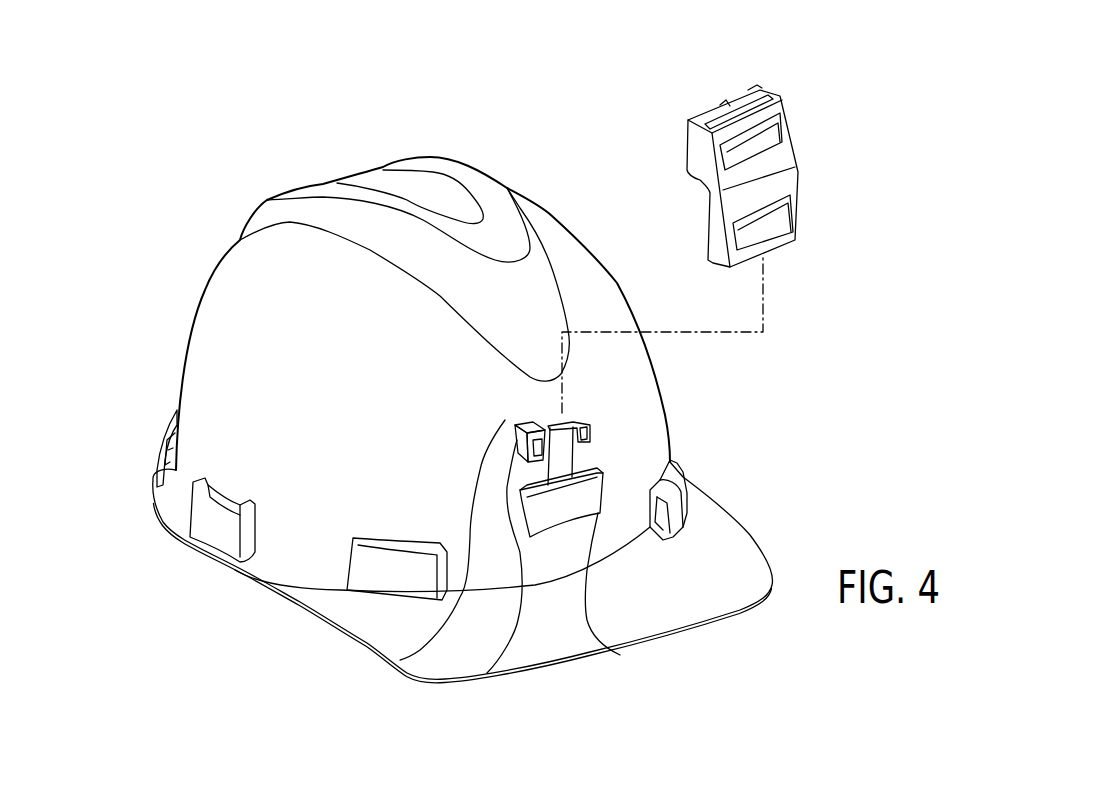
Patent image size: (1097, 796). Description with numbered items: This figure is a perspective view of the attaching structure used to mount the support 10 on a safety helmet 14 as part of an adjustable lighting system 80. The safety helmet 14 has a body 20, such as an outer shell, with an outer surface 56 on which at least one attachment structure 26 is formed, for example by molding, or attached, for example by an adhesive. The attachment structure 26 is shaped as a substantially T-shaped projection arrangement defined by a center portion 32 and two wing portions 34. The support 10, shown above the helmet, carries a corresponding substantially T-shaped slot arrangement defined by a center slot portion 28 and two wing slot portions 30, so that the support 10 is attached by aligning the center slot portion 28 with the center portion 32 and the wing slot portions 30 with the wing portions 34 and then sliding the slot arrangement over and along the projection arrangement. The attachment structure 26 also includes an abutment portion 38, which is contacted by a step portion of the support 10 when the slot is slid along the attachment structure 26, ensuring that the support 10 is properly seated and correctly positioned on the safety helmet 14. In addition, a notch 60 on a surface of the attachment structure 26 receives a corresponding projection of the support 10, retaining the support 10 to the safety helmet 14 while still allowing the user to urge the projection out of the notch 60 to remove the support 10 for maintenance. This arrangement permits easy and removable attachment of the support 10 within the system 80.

The support 10 is at (840, 87).
The safety helmet 14 is at (125, 297).
The body 20 is at (203, 382).
The attachment structure 26 is at (640, 408).
The center slot portion 28 is at (727, 106).
The wing slot portions 30 is at (748, 90).
The center portion 32 is at (565, 412).
The wing portions 34 is at (590, 417).
The abutment portion 38 is at (620, 655).
The outer surface 56 is at (283, 543).
The notch 60 is at (590, 442).
The adjustable lighting system 80 is at (833, 352).